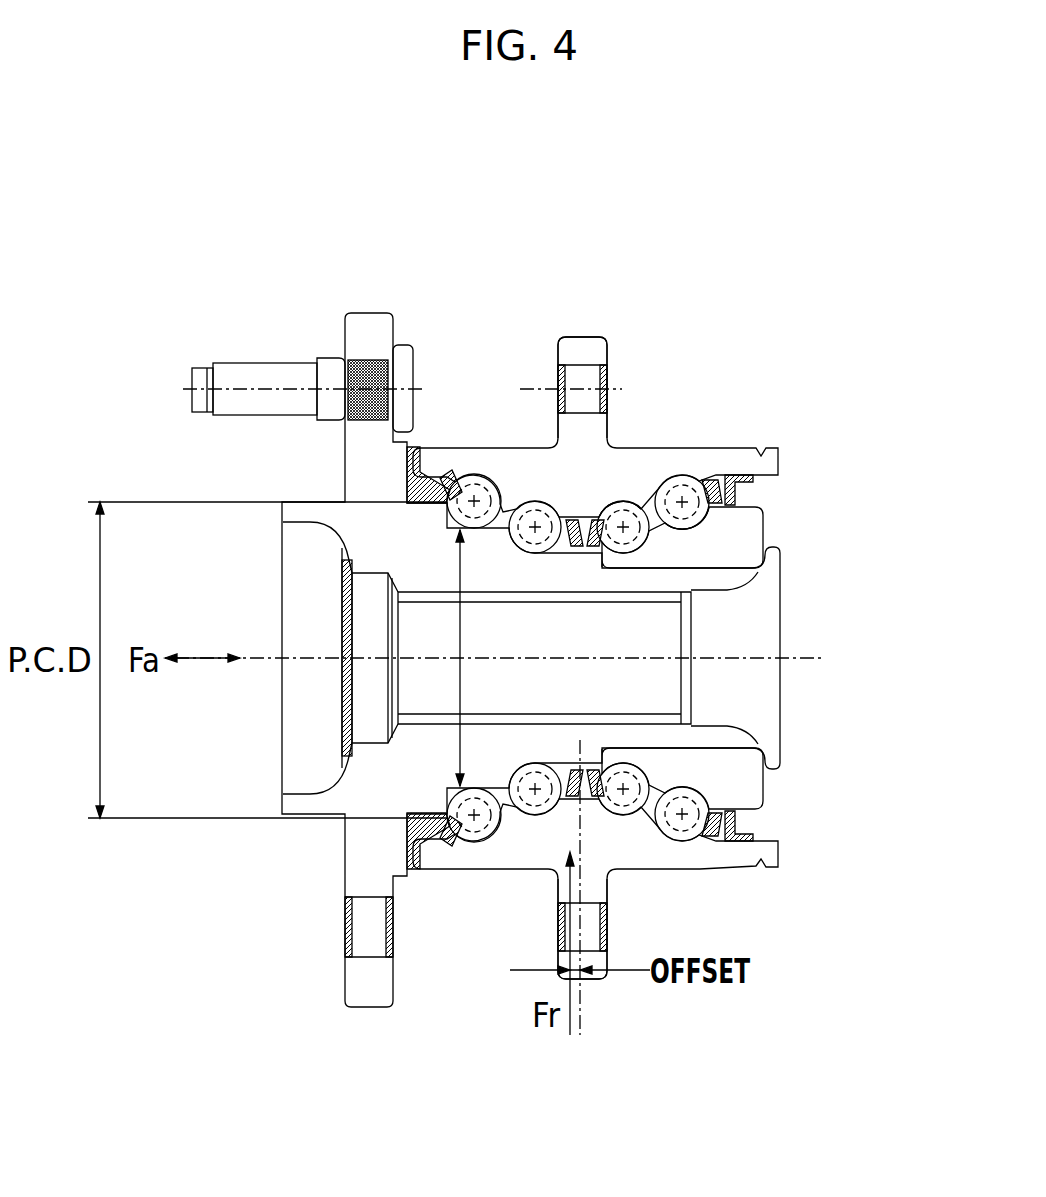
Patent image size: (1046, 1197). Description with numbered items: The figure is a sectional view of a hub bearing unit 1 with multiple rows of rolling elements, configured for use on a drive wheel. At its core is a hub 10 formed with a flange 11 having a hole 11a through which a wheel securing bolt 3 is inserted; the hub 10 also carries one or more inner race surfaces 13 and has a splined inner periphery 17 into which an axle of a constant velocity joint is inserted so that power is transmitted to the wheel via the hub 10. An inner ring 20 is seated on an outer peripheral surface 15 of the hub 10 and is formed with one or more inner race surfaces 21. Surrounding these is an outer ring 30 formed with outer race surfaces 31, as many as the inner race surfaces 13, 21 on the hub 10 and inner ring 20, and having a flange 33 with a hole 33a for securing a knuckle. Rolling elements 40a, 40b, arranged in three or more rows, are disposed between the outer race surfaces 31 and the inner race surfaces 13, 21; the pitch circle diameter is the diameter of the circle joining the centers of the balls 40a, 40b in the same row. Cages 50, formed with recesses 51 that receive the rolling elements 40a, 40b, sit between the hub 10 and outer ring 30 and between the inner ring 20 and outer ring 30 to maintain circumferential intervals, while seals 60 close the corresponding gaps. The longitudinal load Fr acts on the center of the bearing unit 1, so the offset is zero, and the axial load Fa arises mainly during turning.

The hub bearing unit 1 is at (450, 240).
The wheel securing bolt 3 is at (222, 383).
The hub 10 is at (303, 517).
The flange 11 is at (378, 318).
The hole 11a is at (353, 370).
The inner race surfaces 13 is at (452, 508).
The outer peripheral surface 15 is at (690, 595).
The splined inner periphery 17 is at (420, 626).
The inner ring 20 is at (750, 525).
The inner race surfaces 21 is at (660, 545).
The outer ring 30 is at (668, 455).
The outer race surfaces 31 is at (614, 479).
The flange 33 is at (587, 365).
The hole 33a is at (612, 377).
The rolling elements 40a is at (533, 555).
The rolling elements 40b is at (497, 478).
The cages 50 is at (440, 473).
The recesses 51 is at (473, 478).
The seals 60 is at (753, 488).